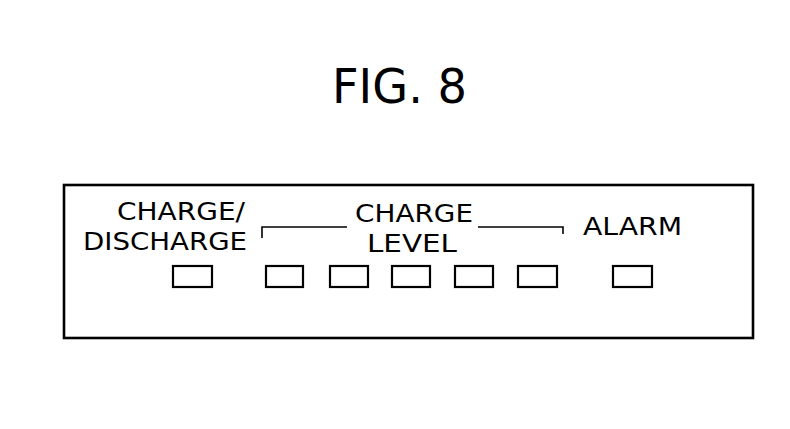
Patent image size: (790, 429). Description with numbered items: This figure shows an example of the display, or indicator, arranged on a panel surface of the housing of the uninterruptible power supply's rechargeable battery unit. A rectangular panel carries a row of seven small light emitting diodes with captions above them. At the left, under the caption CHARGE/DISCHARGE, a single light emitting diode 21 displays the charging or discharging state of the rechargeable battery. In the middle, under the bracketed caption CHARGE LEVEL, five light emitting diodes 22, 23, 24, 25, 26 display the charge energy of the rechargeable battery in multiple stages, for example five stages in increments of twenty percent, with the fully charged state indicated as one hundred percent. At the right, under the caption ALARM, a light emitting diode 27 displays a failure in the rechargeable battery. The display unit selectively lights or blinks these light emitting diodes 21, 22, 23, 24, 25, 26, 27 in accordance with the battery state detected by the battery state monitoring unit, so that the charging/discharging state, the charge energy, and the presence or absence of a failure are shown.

The charge/discharge indicator lamp 21 is at (193, 279).
The charge level indicator lamp 22 is at (284, 279).
The charge level indicator lamp 23 is at (349, 279).
The charge level indicator lamp 24 is at (412, 279).
The charge level indicator lamp 25 is at (475, 279).
The charge level indicator lamp 26 is at (538, 279).
The alarm indicator lamp 27 is at (633, 279).